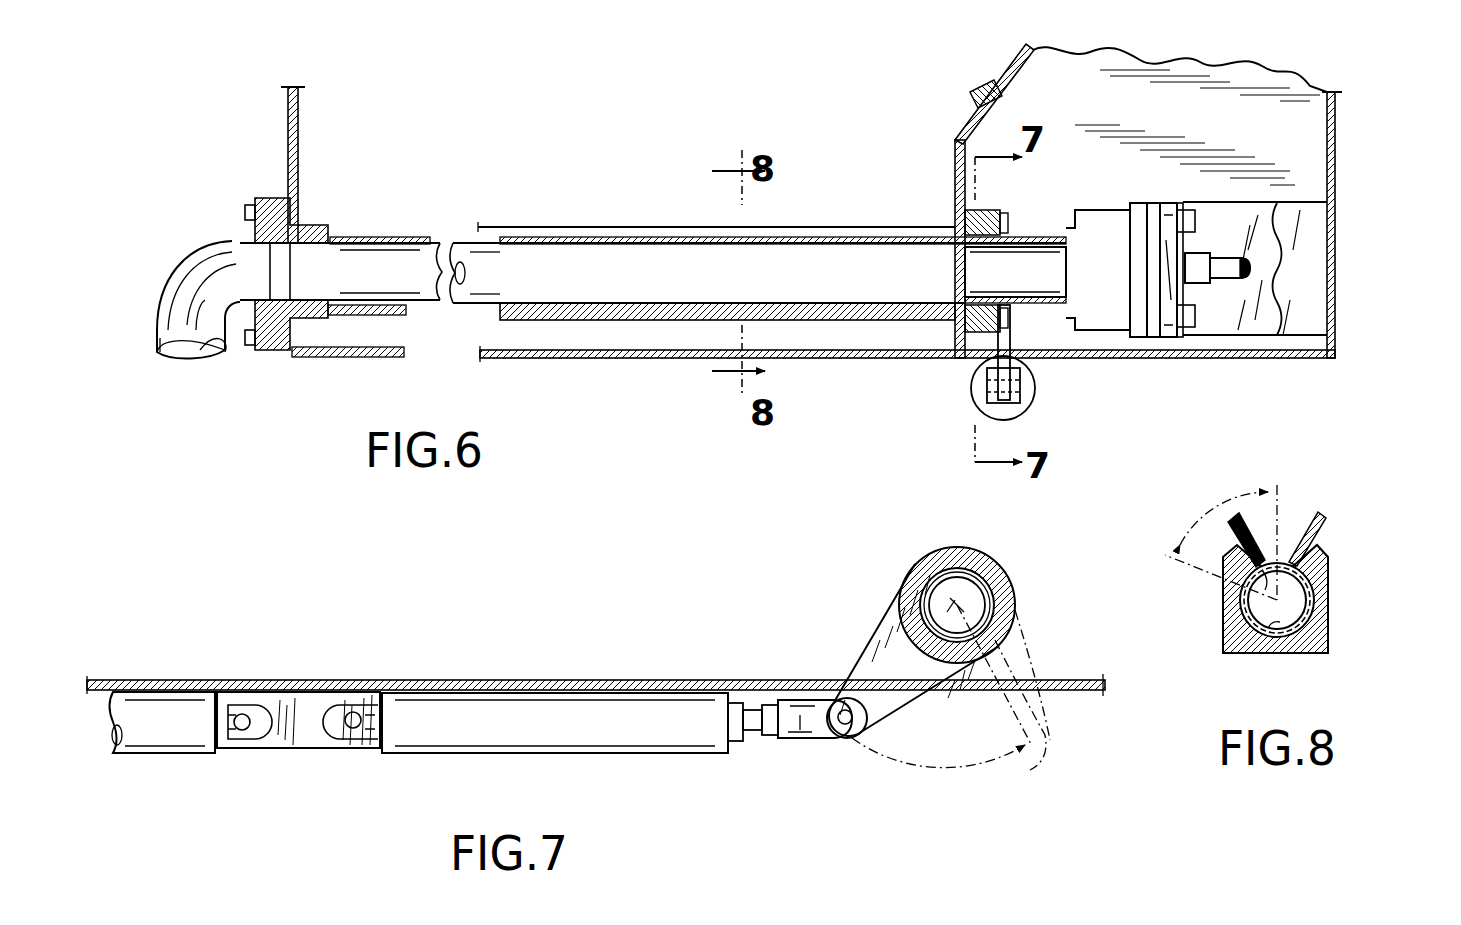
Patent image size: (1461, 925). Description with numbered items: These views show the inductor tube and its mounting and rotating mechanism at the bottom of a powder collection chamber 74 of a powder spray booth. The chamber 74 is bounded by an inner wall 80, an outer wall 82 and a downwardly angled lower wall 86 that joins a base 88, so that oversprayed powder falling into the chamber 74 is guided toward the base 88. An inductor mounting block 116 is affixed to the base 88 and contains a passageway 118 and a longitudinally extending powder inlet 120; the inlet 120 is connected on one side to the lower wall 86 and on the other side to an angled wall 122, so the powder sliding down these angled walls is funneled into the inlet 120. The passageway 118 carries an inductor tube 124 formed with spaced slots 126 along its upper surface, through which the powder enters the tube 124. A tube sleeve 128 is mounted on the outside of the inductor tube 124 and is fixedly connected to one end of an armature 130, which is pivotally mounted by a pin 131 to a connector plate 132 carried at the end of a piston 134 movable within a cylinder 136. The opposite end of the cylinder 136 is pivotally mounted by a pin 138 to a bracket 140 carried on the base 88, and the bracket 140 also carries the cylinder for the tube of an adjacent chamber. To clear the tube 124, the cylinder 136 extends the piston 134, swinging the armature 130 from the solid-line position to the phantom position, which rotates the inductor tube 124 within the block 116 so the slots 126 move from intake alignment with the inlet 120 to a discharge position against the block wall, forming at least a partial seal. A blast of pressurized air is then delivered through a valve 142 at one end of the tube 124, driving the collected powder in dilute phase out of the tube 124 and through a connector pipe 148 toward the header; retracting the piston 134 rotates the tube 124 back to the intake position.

In FIG. 6, the powder collection chamber 74 is at (586, 145).
In FIG. 8, the powder collection chamber 74 is at (1310, 500).
In FIG. 6, the inner wall 80 is at (300, 86).
In FIG. 6, the outer wall 82 is at (1338, 122).
In FIG. 8, the lower wall 86 is at (1328, 522).
In FIG. 6, the base 88 is at (640, 358).
In FIG. 7, the base 88 is at (238, 680).
In FIG. 6, the inductor mounting block 116 is at (535, 320).
In FIG. 8, the inductor mounting block 116 is at (1330, 628).
In FIG. 6, the passageway 118 is at (855, 300).
In FIG. 8, the passageway 118 is at (1312, 590).
In FIG. 6, the powder inlet 120 is at (610, 221).
In FIG. 8, the powder inlet 120 is at (1282, 510).
In FIG. 8, the angled wall 122 is at (1220, 530).
In FIG. 6, the inductor tube 124 is at (404, 287).
In FIG. 8, the inductor tube 124 is at (1270, 640).
In FIG. 6, the slots 126 is at (540, 237).
In FIG. 8, the slots 126 is at (1308, 575).
In FIG. 6, the tube sleeve 128 is at (995, 210).
In FIG. 7, the tube sleeve 128 is at (985, 565).
In FIG. 6, the armature 130 is at (1010, 330).
In FIG. 7, the armature 130 is at (968, 725).
In FIG. 6, the pin 131 is at (1035, 388).
In FIG. 7, the pin 131 is at (840, 738).
In FIG. 6, the connector plate 132 is at (1025, 410).
In FIG. 7, the connector plate 132 is at (800, 738).
In FIG. 7, the piston 134 is at (752, 735).
In FIG. 7, the cylinder 136 is at (143, 753).
In FIG. 7, the pin 138 is at (345, 728).
In FIG. 7, the bracket 140 is at (300, 705).
In FIG. 6, the valve 142 is at (1015, 272).
In FIG. 6, the connector pipe 148 is at (205, 345).